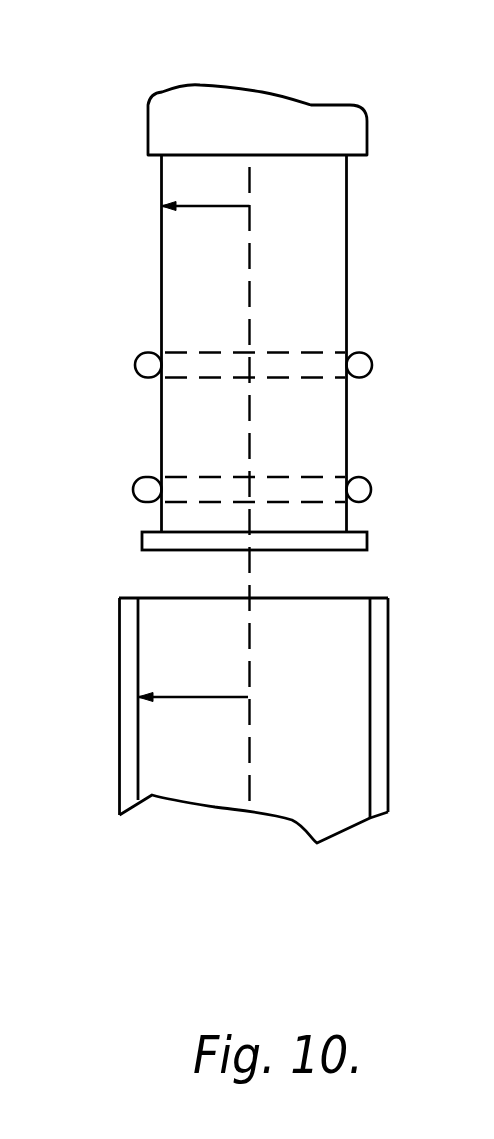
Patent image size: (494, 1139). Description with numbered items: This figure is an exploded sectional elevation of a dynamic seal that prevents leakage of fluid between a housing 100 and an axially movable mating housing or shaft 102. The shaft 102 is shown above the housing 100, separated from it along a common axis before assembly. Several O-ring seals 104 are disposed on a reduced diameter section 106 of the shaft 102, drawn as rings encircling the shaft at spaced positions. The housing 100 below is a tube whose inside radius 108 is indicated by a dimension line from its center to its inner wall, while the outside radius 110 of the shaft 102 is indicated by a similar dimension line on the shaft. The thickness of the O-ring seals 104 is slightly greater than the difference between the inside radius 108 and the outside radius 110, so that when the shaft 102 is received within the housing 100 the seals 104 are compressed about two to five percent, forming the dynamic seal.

The housing 100 is at (388, 758).
The shaft 102 is at (180, 134).
The O-ring seals 104 is at (372, 368).
The reduced diameter section 106 is at (161, 247).
The inside radius 108 is at (192, 698).
The outside radius 110 is at (210, 206).